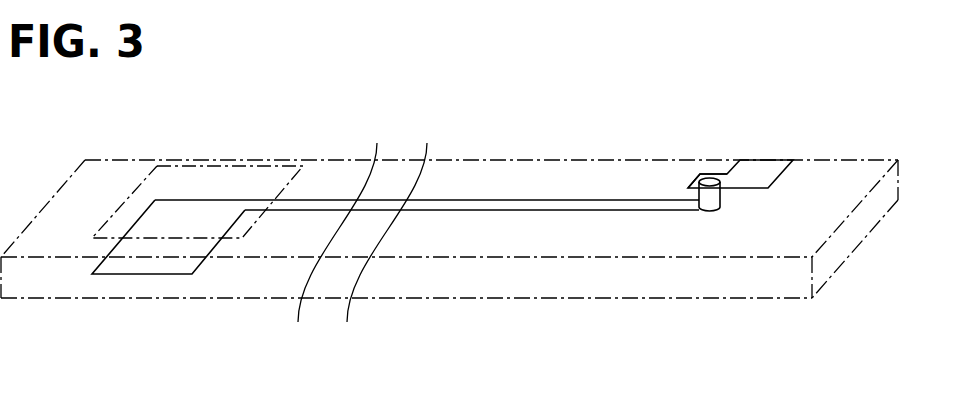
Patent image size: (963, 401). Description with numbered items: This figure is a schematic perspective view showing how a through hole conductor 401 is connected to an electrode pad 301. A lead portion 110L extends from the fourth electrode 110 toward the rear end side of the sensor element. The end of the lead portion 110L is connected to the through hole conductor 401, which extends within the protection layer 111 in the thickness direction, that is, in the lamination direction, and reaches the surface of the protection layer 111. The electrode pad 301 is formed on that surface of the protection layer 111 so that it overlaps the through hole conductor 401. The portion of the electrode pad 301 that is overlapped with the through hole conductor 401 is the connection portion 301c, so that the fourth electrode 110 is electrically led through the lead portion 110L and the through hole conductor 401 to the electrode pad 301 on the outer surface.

The fourth electrode 110 is at (205, 213).
The lead portion 110L is at (513, 198).
The protection layer 111 is at (48, 280).
The electrode pad 301 is at (760, 172).
The connection portion 301c is at (705, 178).
The through hole conductor 401 is at (713, 197).